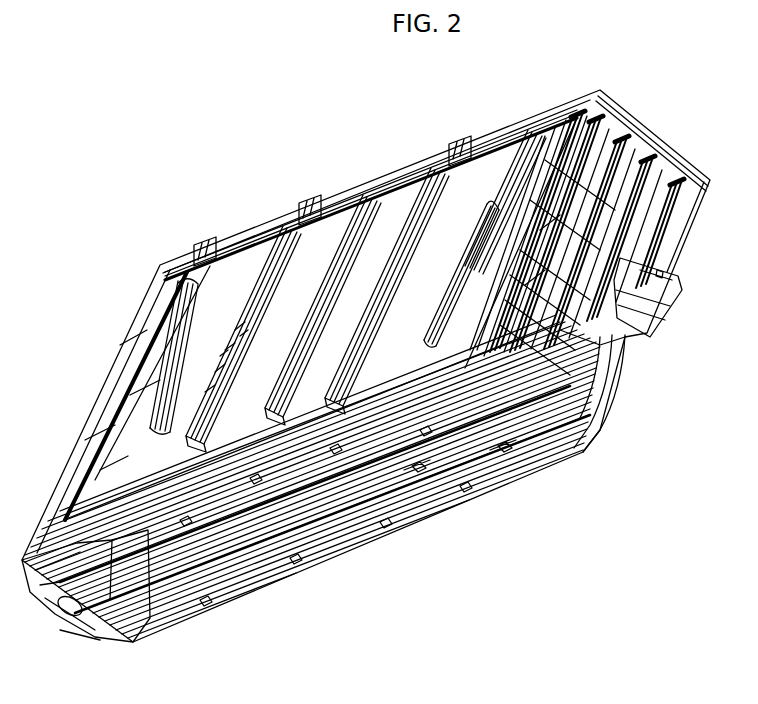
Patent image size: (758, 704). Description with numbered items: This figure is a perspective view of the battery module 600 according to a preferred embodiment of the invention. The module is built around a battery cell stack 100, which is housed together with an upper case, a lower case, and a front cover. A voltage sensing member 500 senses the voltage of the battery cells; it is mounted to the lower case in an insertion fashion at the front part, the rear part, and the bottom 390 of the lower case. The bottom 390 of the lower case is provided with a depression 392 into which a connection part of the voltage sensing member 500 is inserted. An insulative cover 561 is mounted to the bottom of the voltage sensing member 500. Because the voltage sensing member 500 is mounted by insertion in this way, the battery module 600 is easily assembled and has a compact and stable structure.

The battery cell stack 100 is at (388, 200).
The bottom 390 is at (327, 568).
The depression 392 is at (418, 475).
The voltage sensing member 500 is at (570, 330).
The insulative cover 561 is at (505, 455).
The battery module 600 is at (44, 137).